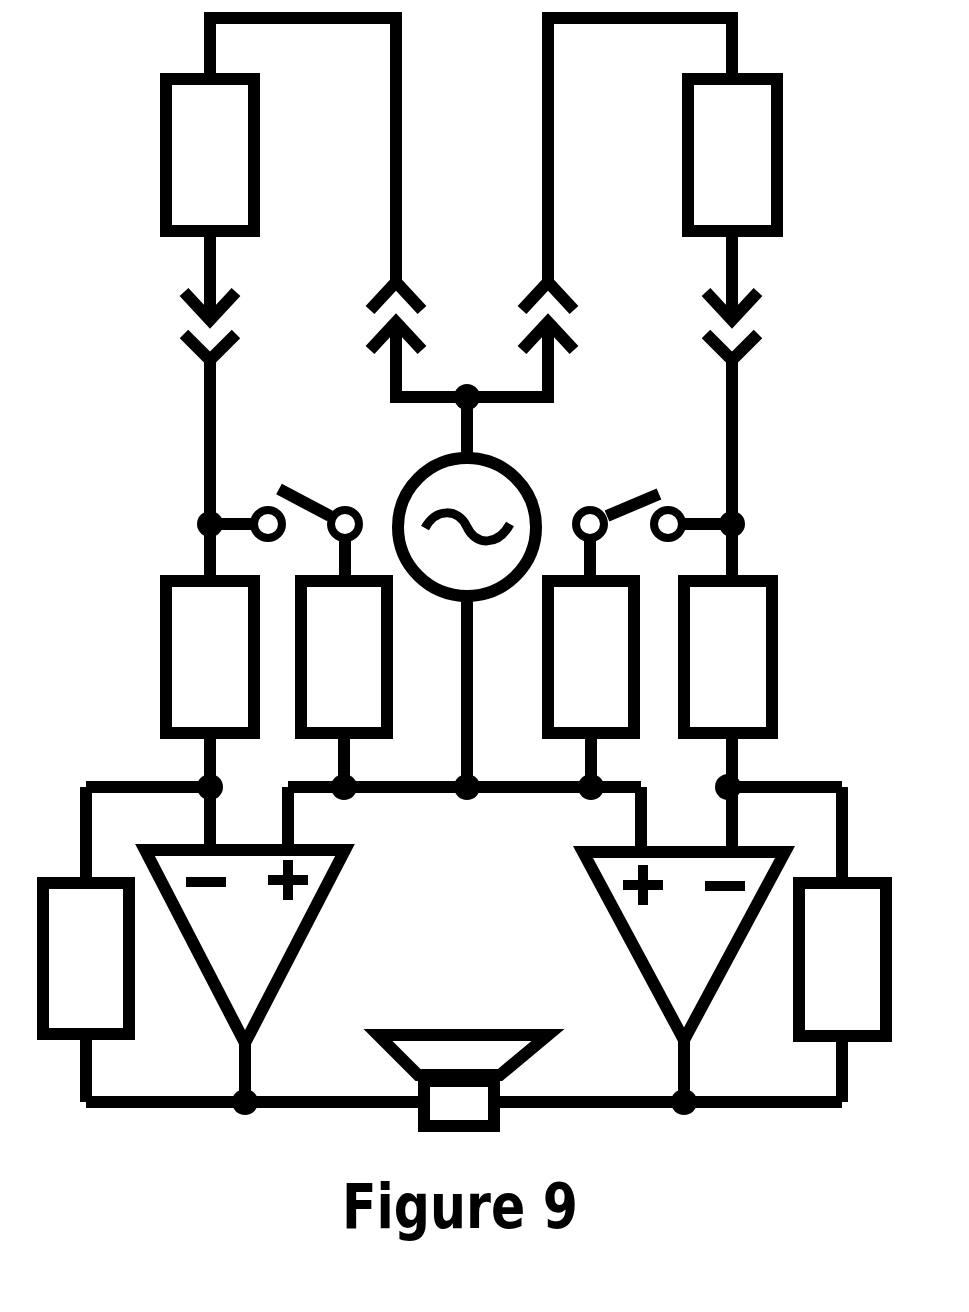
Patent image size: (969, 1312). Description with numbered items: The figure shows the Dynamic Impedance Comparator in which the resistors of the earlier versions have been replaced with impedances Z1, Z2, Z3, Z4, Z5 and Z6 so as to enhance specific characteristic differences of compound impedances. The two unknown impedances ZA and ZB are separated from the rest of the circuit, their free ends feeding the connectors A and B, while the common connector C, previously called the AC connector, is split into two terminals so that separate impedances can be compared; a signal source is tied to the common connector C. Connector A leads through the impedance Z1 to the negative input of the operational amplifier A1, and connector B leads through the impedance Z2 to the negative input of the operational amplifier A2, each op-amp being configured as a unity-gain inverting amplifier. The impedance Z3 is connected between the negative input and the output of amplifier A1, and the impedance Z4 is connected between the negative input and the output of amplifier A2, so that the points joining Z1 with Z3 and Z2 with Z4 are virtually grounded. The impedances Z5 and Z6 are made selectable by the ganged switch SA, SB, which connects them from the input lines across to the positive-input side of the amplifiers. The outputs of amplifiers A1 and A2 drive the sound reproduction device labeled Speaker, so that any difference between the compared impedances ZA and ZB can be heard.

The unknown impedance ZA is at (269, 155).
The unknown impedance ZB is at (678, 155).
The connector A is at (174, 324).
The connector B is at (765, 326).
The common connector C is at (472, 324).
The ganged switch SA is at (285, 492).
The ganged switch SB is at (653, 487).
The impedance Z1 is at (159, 646).
The impedance Z2 is at (779, 646).
The impedance Z3 is at (136, 991).
The impedance Z4 is at (809, 992).
The impedance Z5 is at (291, 755).
The impedance Z6 is at (644, 755).
The operational amplifier A1 is at (245, 976).
The operational amplifier A2 is at (684, 977).
The sound reproduction device Speaker is at (461, 1030).